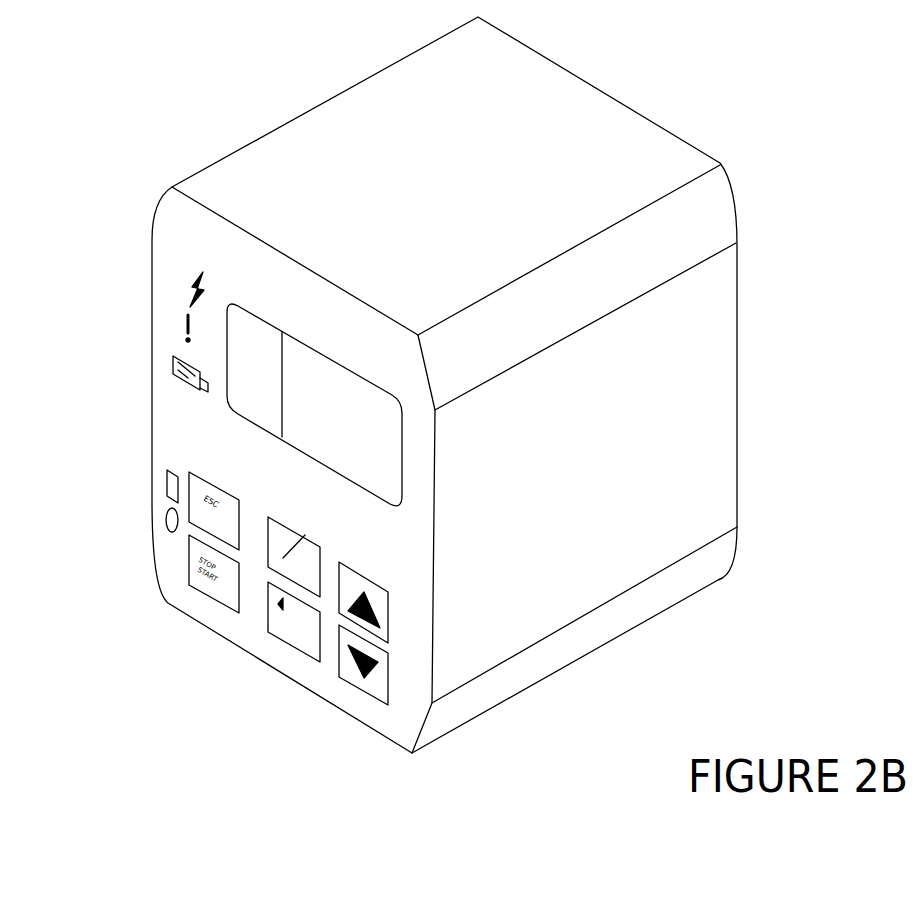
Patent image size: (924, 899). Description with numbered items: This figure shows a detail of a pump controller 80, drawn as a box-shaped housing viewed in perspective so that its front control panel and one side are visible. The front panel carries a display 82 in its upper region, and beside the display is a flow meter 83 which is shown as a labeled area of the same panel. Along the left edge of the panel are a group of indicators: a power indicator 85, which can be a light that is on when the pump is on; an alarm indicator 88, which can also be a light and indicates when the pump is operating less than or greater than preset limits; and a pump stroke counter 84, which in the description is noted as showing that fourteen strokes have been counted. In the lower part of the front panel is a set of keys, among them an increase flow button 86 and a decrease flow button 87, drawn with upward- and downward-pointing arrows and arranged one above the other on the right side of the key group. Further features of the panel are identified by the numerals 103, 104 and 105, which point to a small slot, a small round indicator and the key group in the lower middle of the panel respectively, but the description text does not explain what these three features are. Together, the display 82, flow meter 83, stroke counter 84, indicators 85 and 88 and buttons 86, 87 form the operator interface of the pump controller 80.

The pump controller 80 is at (662, 637).
The display 82 is at (377, 450).
The flow meter 83 is at (244, 327).
The pump stroke counter 84 is at (177, 368).
The power indicator 85 is at (187, 277).
The increase flow button 86 is at (380, 613).
The decrease flow button 87 is at (378, 675).
The alarm indicator 88 is at (178, 325).
The connector slot 103 is at (172, 488).
The indicator light 104 is at (172, 520).
The OK / info buttons 105 is at (305, 610).